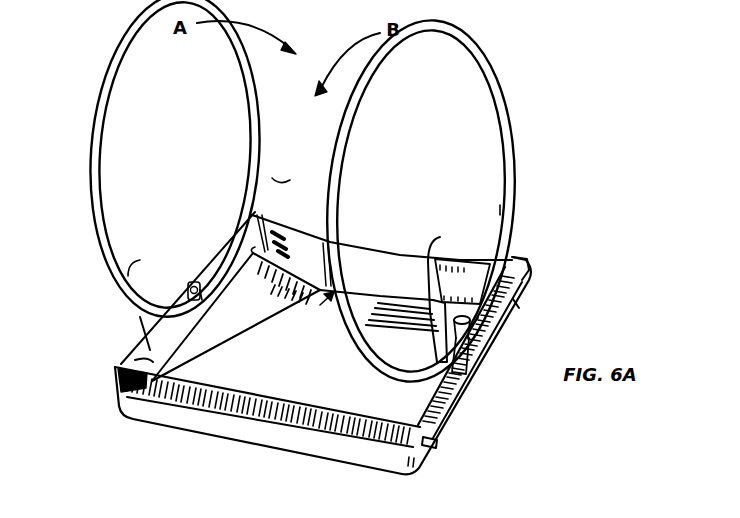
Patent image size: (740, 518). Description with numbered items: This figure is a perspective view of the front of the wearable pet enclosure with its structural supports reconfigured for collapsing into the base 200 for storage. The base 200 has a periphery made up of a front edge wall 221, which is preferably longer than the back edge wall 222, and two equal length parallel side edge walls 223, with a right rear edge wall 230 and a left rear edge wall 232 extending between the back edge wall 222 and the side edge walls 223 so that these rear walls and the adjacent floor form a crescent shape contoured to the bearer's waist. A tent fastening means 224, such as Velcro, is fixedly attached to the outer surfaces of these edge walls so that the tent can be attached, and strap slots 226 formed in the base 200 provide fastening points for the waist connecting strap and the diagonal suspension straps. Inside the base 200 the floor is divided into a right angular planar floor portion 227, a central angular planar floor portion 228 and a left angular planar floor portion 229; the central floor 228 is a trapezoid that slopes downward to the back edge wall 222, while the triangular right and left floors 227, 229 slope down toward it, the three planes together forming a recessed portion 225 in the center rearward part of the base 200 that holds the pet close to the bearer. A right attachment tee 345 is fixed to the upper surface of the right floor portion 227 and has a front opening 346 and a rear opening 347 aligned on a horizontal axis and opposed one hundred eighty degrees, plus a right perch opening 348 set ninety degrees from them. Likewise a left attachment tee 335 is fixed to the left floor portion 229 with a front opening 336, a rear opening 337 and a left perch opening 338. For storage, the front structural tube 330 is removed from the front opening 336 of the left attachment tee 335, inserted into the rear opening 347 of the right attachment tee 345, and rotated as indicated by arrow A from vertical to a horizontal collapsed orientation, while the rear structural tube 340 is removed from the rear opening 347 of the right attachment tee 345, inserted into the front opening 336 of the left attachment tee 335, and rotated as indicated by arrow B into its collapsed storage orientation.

The base 200 is at (422, 491).
The front edge wall 221 is at (260, 430).
The back edge wall 222 is at (392, 273).
The side edge walls 223 is at (519, 308).
The tent fastening means 224 is at (165, 382).
The recessed portion 225 is at (366, 312).
The strap slots 226 is at (288, 237).
The right angular planar floor portion 227 is at (236, 332).
The central angular planar floor portion 228 is at (309, 400).
The left angular planar floor portion 229 is at (440, 237).
The right rear edge wall 230 is at (272, 176).
The left rear edge wall 232 is at (500, 205).
The front structural tube 330 is at (93, 159).
The left attachment tee 335 is at (472, 352).
The front opening 336 is at (452, 378).
The rear opening 337 is at (478, 318).
The left perch opening 338 is at (459, 281).
The rear structural tube 340 is at (513, 140).
The right attachment tee 345 is at (200, 290).
The front opening 346 is at (142, 323).
The rear opening 347 is at (218, 290).
The right perch opening 348 is at (190, 280).